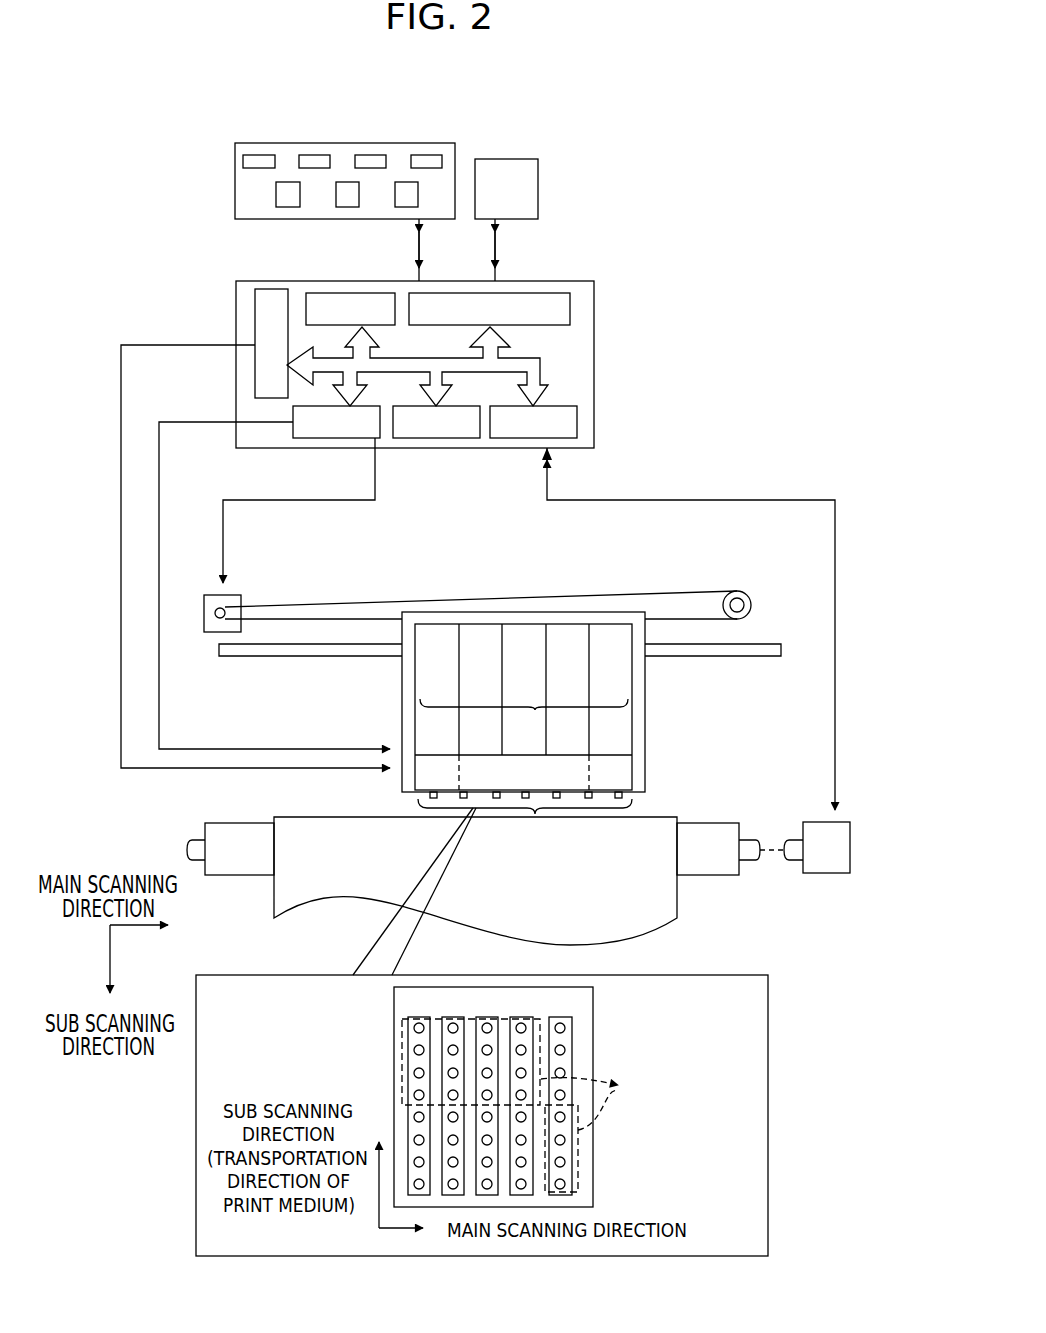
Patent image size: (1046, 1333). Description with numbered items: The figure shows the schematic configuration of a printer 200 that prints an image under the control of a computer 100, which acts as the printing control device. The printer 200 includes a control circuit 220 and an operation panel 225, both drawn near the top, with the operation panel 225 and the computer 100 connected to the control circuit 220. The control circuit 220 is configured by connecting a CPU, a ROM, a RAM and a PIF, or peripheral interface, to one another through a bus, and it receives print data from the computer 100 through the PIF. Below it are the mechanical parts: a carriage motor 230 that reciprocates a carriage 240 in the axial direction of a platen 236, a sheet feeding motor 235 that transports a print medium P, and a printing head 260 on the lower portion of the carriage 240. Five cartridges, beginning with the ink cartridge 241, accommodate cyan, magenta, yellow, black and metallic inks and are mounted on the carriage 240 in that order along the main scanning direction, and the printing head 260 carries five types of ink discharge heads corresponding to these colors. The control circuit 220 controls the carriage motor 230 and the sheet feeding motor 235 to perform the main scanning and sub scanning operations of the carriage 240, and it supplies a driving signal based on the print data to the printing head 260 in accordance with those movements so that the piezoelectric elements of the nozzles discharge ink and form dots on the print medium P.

The printer 200 is at (142, 136).
The operation panel 225 is at (393, 143).
The computer 100 is at (509, 159).
The control circuit 220 is at (594, 343).
The carriage motor 230 is at (211, 634).
The carriage 240 is at (645, 742).
The ink cartridge 241 is at (535, 708).
The printing head 260 is at (668, 777).
The platen 236 is at (721, 876).
The sheet feeding motor 235 is at (826, 875).
The print medium P is at (622, 930).